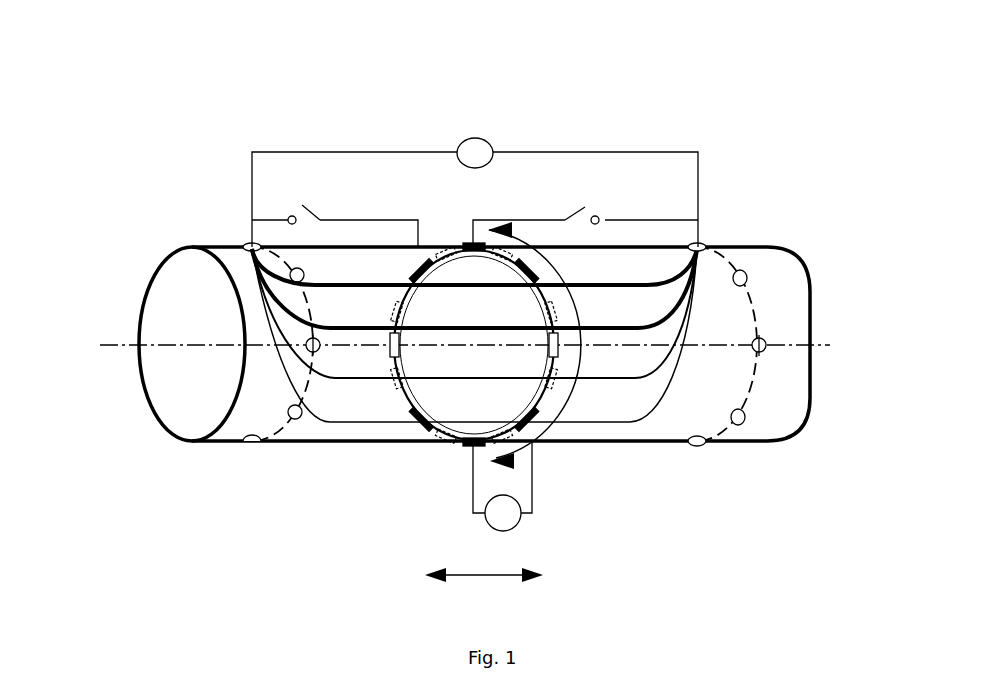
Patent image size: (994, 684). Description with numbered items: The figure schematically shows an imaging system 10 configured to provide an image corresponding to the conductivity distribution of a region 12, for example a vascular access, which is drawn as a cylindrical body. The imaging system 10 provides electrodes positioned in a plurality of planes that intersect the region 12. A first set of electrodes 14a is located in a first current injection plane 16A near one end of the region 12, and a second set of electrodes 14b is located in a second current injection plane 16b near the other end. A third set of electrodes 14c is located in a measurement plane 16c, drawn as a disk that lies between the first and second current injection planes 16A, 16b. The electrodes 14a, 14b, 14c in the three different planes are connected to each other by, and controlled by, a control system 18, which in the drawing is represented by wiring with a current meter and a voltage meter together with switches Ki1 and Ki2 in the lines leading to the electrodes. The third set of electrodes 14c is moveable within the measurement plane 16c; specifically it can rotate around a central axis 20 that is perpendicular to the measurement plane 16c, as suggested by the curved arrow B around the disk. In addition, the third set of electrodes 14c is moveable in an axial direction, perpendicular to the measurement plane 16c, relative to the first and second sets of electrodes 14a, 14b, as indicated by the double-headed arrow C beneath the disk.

The imaging system 10 is at (755, 188).
The region 12 is at (770, 275).
The first set of electrodes 14a is at (297, 272).
The second set of electrodes 14b is at (747, 410).
The third set of electrodes 14c is at (468, 452).
The first current injection plane 16A is at (272, 448).
The second current injection plane 16b is at (720, 433).
The measurement plane 16c is at (412, 448).
The control system 18 is at (530, 135).
The central axis 20 is at (117, 340).
The switch Ki1 is at (304, 202).
The switch Ki2 is at (587, 202).
The rotation direction B is at (545, 345).
The translation direction C is at (484, 566).